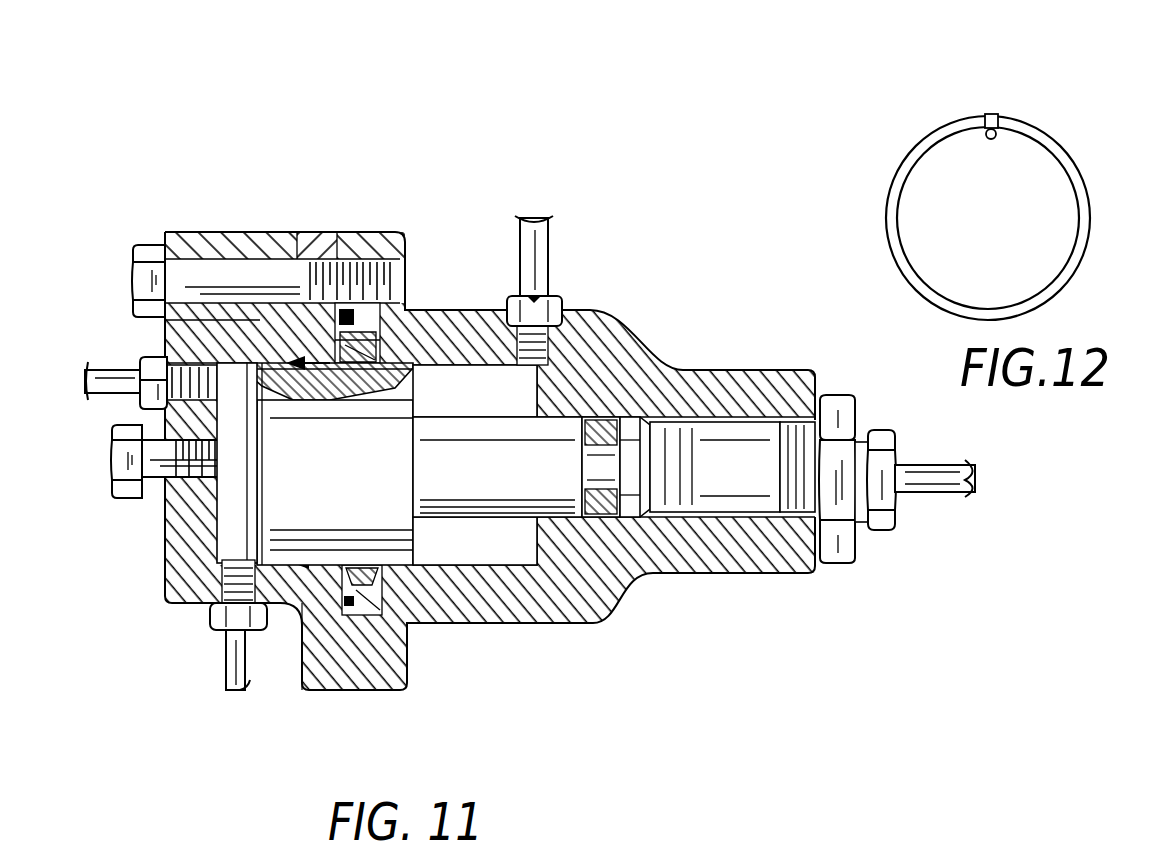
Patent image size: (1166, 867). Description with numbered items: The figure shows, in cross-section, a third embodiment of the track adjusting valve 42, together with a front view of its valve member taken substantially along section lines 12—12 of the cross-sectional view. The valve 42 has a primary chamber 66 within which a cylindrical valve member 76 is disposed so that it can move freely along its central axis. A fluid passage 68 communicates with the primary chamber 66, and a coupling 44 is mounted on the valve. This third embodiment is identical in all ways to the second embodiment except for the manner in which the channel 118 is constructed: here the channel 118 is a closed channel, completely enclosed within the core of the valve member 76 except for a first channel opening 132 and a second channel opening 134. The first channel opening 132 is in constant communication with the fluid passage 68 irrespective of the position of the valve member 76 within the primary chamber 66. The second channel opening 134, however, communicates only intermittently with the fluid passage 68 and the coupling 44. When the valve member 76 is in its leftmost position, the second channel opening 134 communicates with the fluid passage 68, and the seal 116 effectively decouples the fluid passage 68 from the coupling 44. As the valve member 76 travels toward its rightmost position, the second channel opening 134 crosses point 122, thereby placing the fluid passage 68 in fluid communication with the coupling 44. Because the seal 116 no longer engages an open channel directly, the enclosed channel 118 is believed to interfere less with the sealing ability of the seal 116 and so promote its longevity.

In FIG. 11, the section lines 12— 12 is at (310, 444).
In FIG. 11, the valve 42 is at (695, 315).
In FIG. 11, the coupling 44 is at (548, 245).
In FIG. 11, the primary chamber 66 is at (492, 412).
In FIG. 11, the fluid passage 68 is at (233, 507).
In FIG. 11, the valve member 76 is at (368, 497).
In FIG. 12, the valve member 76 is at (1012, 239).
In FIG. 11, the seal 116 is at (362, 362).
In FIG. 11, the channel 118 is at (260, 365).
In FIG. 12, the channel 118 is at (960, 123).
In FIG. 11, the point 122 is at (387, 366).
In FIG. 11, the first channel opening 132 is at (246, 372).
In FIG. 12, the first channel opening 132 is at (1000, 131).
In FIG. 11, the second channel opening 134 is at (352, 348).
In FIG. 12, the second channel opening 134 is at (995, 118).